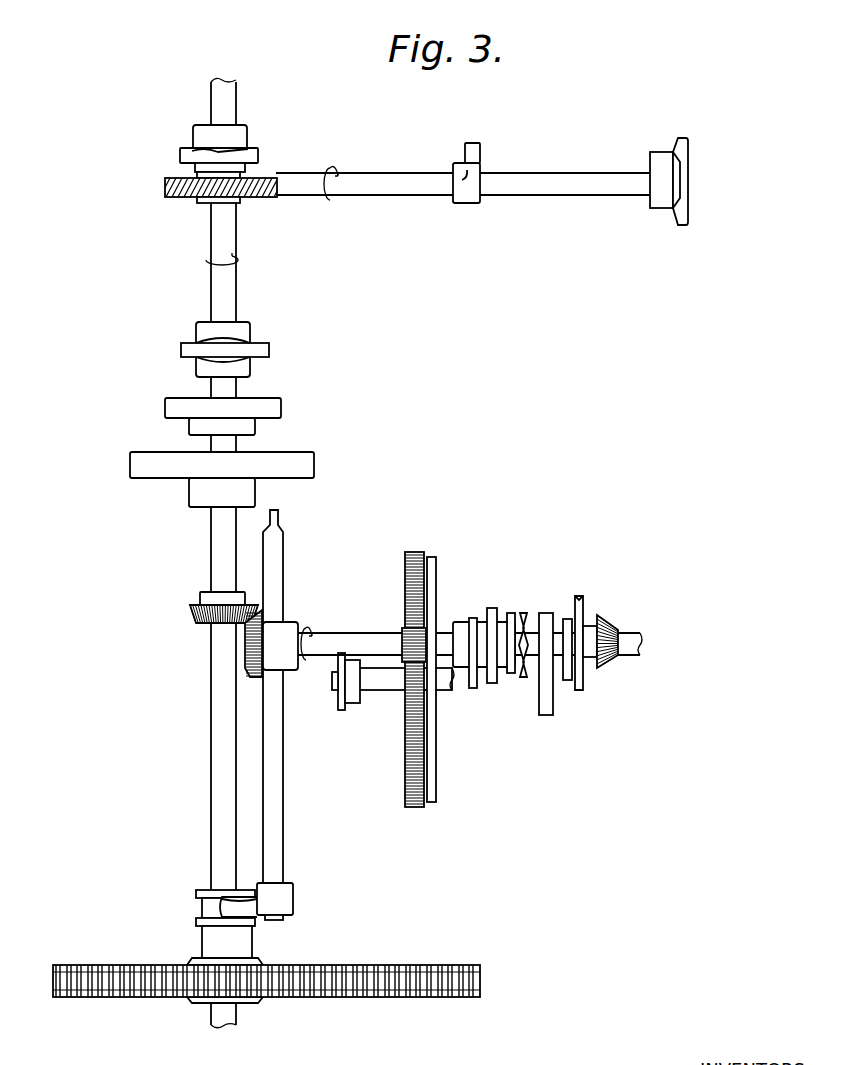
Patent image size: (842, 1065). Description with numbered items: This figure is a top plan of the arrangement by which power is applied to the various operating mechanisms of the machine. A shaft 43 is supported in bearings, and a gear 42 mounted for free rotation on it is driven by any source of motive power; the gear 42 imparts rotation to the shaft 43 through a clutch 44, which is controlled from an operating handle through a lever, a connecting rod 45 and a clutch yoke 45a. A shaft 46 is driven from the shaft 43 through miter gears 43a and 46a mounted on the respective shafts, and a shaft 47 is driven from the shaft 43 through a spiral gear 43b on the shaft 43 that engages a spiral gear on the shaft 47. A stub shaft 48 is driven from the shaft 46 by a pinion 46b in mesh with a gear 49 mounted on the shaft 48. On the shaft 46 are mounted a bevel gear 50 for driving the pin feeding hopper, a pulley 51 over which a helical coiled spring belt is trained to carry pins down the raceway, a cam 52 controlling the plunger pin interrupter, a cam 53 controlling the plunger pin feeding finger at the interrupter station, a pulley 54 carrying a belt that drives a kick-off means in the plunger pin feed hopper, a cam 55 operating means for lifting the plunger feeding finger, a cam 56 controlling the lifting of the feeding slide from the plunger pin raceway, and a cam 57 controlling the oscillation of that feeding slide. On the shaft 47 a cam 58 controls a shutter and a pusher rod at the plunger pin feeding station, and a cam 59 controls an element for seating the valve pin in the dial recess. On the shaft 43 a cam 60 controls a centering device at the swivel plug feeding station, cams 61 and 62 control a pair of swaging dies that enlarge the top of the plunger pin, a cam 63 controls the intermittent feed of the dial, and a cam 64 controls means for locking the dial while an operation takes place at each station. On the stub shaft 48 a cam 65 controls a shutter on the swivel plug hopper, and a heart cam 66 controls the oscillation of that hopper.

The gear 42 is at (338, 985).
The shaft 43 is at (212, 822).
The miter gear 43a is at (198, 612).
The spiral gear 43b is at (253, 200).
The clutch 44 is at (196, 921).
The connecting rod 45 is at (289, 827).
The clutch yoke 45a is at (286, 912).
The shaft 46 is at (352, 627).
The miter gear 46a is at (252, 672).
The pinion 46b is at (405, 630).
The shaft 47 is at (392, 188).
The stub shaft 48 is at (388, 690).
The gear 49 is at (411, 776).
The bevel gear 50 is at (608, 626).
The pulley 51 is at (581, 597).
The cam 52 is at (568, 620).
The cam 53 is at (546, 613).
The pulley 54 is at (524, 614).
The cam 55 is at (512, 613).
The cam 56 is at (491, 610).
The cam 57 is at (473, 620).
The cam 58 is at (663, 208).
The cam 59 is at (472, 163).
The cam 60 is at (215, 150).
The cam 61 is at (212, 338).
The cam 62 is at (205, 357).
The cam 63 is at (130, 465).
The cam 64 is at (165, 408).
The cam 65 is at (340, 712).
The heart cam 66 is at (433, 732).